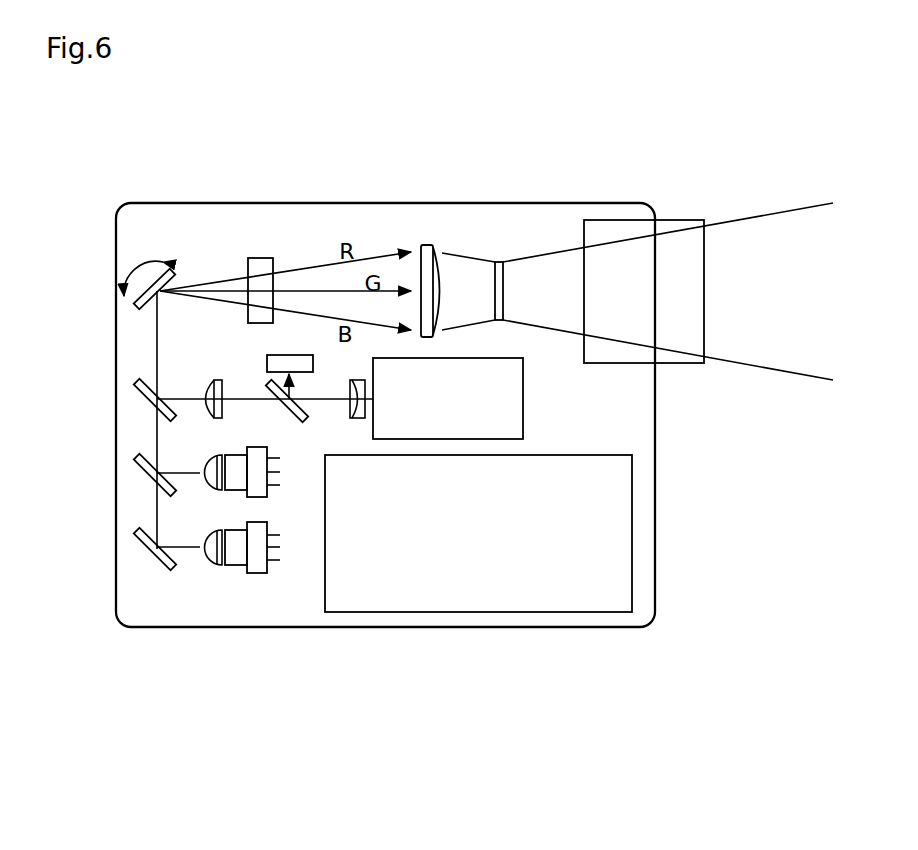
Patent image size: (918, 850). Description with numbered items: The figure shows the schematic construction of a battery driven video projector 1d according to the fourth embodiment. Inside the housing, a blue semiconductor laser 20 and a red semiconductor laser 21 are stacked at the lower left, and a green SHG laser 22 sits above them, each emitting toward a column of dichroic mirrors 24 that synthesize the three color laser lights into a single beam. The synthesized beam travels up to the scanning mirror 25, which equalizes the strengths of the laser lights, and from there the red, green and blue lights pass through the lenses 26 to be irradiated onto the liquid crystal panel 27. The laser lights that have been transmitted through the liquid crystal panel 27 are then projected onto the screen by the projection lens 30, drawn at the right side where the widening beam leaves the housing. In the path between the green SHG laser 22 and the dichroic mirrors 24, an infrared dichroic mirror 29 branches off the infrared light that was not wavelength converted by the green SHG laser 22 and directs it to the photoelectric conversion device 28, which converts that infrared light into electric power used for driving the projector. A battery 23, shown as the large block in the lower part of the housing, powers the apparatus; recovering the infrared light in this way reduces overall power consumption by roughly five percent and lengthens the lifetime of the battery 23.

The video projector 1d is at (166, 697).
The blue semiconductor laser 20 is at (235, 558).
The red semiconductor laser 21 is at (259, 489).
The green SHG laser 22 is at (515, 419).
The battery 23 is at (618, 528).
The dichroic mirrors 24 is at (142, 408).
The scanning mirror 25 is at (172, 267).
The lenses 26 is at (427, 247).
The liquid crystal panel 27 is at (502, 263).
The photoelectric conversion device 28 is at (269, 359).
The infrared dichroic mirror 29 is at (271, 387).
The projection lens 30 is at (675, 223).